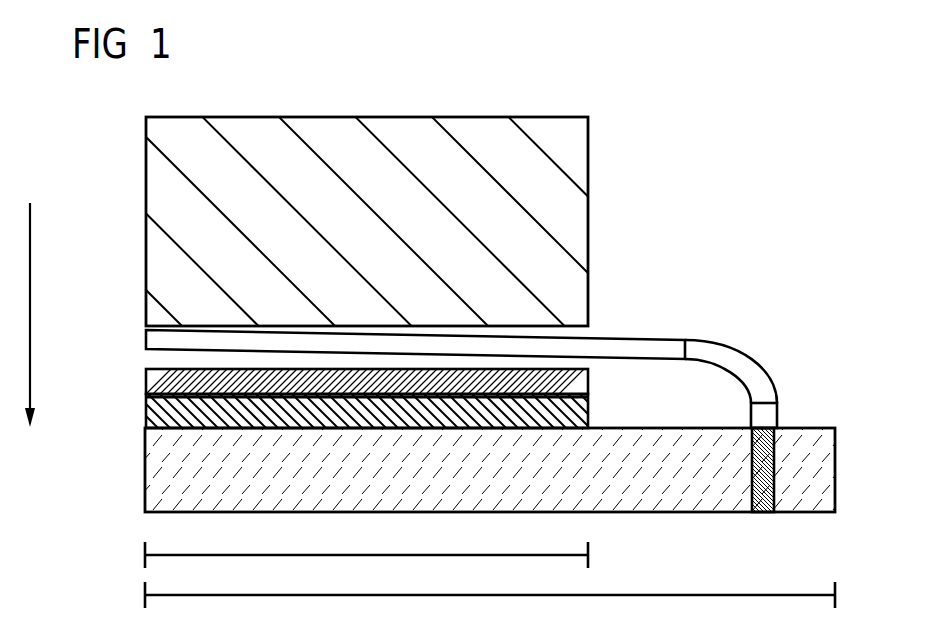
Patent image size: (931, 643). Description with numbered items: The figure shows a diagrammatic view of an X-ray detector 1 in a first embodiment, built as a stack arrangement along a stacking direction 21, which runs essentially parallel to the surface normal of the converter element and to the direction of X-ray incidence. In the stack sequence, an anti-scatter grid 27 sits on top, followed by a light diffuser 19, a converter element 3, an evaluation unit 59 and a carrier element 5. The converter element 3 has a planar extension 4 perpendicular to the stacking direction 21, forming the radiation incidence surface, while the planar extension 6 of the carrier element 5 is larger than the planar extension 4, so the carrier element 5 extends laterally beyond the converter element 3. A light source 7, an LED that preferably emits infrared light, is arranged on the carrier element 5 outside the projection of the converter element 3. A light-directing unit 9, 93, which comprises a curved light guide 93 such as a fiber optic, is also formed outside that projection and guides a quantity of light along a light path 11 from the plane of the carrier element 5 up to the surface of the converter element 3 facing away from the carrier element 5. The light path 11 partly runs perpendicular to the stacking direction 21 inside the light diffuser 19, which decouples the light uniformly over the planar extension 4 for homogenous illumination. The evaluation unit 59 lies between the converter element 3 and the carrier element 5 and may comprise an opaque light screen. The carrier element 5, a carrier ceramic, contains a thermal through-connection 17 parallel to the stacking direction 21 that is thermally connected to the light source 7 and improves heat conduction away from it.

The X-ray detector 1 is at (726, 108).
The stacking direction 21 is at (30, 245).
The anti-scatter grid 27 is at (166, 273).
The light path 11 is at (438, 343).
The light diffuser 19 is at (170, 342).
The light-directing unit 9 is at (750, 378).
The light guide 93 is at (731, 371).
The converter element 3 is at (167, 378).
The evaluation unit 59 is at (167, 409).
The carrier element 5 is at (170, 472).
The light source 7 is at (768, 417).
The thermal through-connection 17 is at (762, 514).
The planar extension of the converter element 4 is at (187, 555).
The planar extension of the carrier element 6 is at (187, 595).